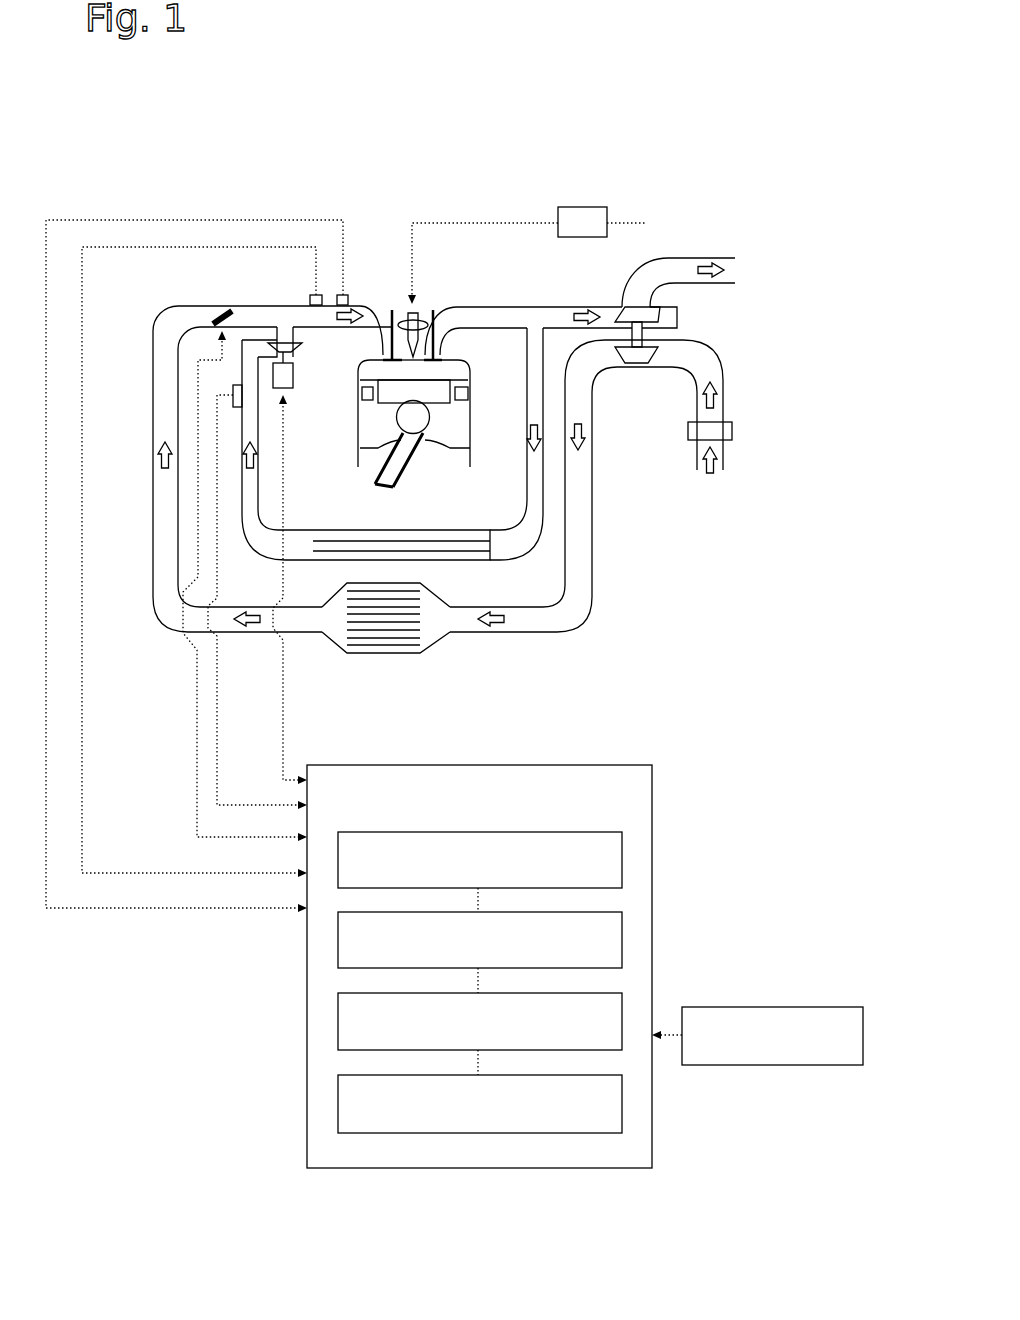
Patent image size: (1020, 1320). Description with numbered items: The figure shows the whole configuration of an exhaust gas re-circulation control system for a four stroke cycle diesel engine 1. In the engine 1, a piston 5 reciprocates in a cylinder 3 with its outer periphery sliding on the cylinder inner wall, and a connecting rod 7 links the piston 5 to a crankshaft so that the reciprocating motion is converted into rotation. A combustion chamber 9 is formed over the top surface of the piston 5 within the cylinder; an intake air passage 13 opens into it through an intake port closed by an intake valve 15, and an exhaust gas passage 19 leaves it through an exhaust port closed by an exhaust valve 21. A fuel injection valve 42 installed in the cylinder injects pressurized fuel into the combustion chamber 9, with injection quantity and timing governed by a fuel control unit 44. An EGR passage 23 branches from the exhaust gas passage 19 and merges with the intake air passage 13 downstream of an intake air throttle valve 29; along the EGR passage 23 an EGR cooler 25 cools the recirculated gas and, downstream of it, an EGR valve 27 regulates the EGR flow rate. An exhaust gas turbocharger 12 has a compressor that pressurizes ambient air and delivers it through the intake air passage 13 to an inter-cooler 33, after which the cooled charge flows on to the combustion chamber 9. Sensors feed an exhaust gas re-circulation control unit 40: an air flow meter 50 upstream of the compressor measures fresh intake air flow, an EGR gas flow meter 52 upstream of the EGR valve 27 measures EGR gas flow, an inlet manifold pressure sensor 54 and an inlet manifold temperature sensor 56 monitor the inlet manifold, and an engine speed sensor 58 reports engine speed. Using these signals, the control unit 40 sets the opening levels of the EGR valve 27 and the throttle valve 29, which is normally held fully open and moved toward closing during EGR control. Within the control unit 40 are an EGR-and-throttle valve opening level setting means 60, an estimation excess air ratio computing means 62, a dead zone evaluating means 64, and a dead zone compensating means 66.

The diesel engine 1 is at (302, 204).
The cylinder 3 is at (358, 369).
The piston 5 is at (458, 426).
The connecting rod 7 is at (404, 463).
The combustion chamber 9 is at (456, 363).
The exhaust gas turbocharger 12 is at (648, 337).
The intake air passage 13 is at (157, 330).
The intake valve 15 is at (390, 312).
The exhaust gas passage 19 is at (547, 307).
The exhaust valve 21 is at (437, 312).
The EGR passage 23 is at (527, 483).
The EGR cooler 25 is at (463, 560).
The EGR valve 27 is at (295, 385).
The intake air throttle valve 29 is at (218, 311).
The inter-cooler 33 is at (413, 655).
The exhaust gas re-circulation control unit 40 is at (568, 1170).
The fuel injection valve 42 is at (407, 303).
The fuel control unit 44 is at (582, 207).
The air flow meter 50 is at (688, 430).
The EGR gas flow meter 52 is at (233, 394).
The inlet manifold pressure sensor 54 is at (310, 298).
The inlet manifold temperature sensor 56 is at (337, 297).
The engine speed sensor 58 is at (823, 1007).
The EGR-and-throttle valve opening level setting means 60 is at (623, 858).
The estimation excess air ratio computing means 62 is at (623, 945).
The dead zone evaluating means 64 is at (612, 1052).
The dead zone compensating means 66 is at (612, 1133).